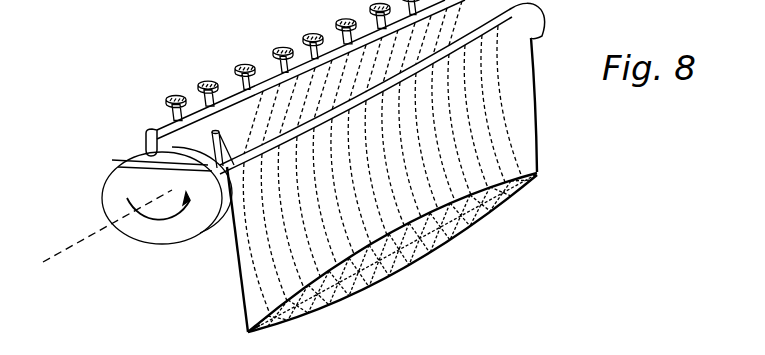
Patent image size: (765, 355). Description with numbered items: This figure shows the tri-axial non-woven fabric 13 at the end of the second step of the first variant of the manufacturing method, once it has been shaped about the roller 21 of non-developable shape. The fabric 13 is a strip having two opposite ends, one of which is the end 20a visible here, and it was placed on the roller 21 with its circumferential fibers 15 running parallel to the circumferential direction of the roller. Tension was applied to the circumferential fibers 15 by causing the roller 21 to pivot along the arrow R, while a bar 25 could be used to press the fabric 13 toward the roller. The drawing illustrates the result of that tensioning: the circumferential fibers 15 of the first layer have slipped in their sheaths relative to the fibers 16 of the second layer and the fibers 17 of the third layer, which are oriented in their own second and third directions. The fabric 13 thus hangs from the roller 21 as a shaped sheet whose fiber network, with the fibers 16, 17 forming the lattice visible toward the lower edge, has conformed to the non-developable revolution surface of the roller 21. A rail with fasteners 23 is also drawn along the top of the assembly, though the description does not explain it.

The tri-axial non-woven fabric 13 is at (239, 267).
The circumferential fibers 15 is at (523, 124).
The fibers 16 is at (495, 216).
The fibers 17 is at (478, 206).
The end 20a is at (325, 280).
The roller 21 is at (127, 183).
The clamping rail with fasteners 23 is at (258, 66).
The bar 25 is at (494, 27).
The arrow R is at (165, 217).